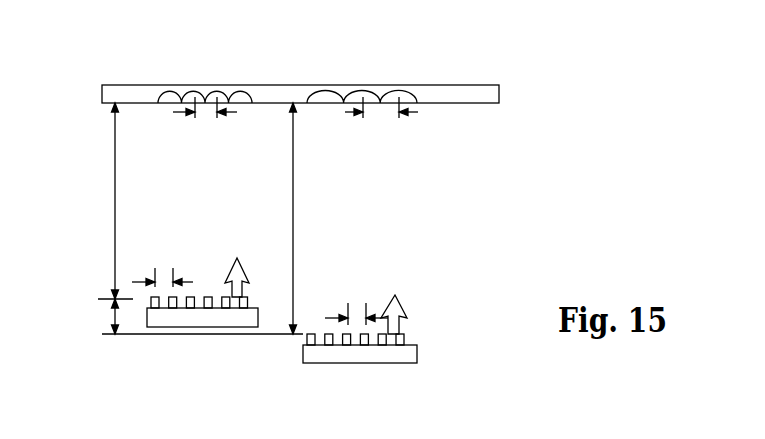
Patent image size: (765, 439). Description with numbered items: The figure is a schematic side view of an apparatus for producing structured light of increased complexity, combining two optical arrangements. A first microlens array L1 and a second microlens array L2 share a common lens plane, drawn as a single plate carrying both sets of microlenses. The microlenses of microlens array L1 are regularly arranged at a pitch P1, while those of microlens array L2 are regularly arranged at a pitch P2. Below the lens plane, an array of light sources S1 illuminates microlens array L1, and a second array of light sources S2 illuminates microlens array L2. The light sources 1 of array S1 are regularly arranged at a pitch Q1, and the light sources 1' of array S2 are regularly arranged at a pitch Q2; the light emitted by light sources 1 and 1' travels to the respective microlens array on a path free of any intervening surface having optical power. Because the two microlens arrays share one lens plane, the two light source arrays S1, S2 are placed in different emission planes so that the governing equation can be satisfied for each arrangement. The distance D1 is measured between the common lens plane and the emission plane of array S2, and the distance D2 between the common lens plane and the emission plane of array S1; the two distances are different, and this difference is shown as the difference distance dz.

The microlens array L1 is at (397, 62).
The microlens array L2 is at (217, 70).
The pitch P1 is at (381, 122).
The pitch P2 is at (205, 122).
The distance D1 is at (101, 201).
The distance D2 is at (314, 218).
The difference distance dz is at (98, 316).
The pitch Q1 is at (356, 299).
The pitch Q2 is at (162, 264).
The array of light sources S1 is at (433, 342).
The array of light sources S2 is at (173, 348).
The light source 1 is at (394, 303).
The light source 1' is at (237, 266).